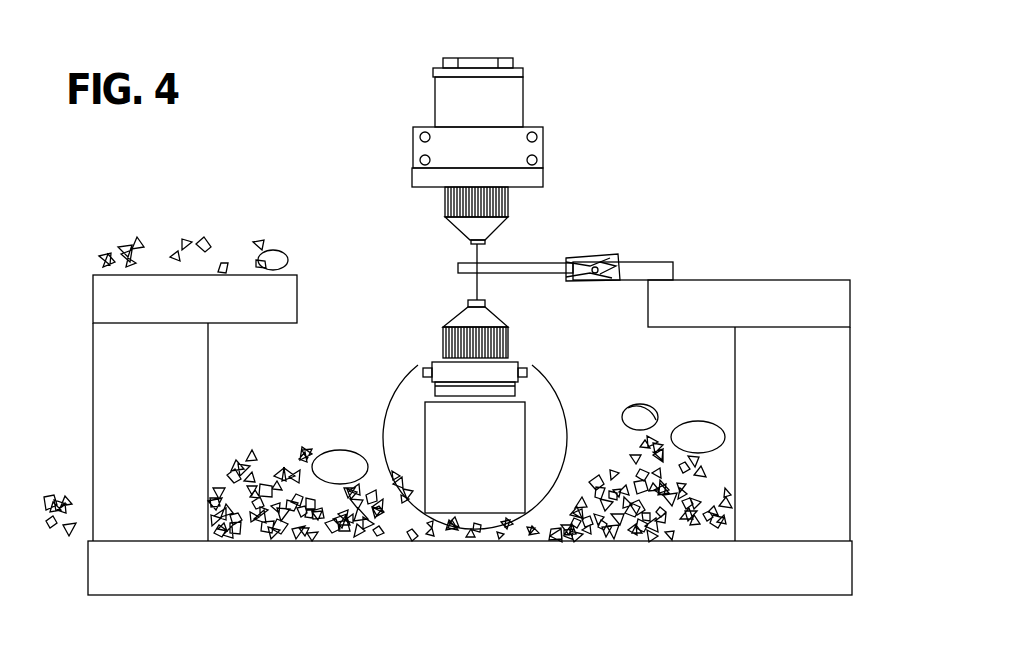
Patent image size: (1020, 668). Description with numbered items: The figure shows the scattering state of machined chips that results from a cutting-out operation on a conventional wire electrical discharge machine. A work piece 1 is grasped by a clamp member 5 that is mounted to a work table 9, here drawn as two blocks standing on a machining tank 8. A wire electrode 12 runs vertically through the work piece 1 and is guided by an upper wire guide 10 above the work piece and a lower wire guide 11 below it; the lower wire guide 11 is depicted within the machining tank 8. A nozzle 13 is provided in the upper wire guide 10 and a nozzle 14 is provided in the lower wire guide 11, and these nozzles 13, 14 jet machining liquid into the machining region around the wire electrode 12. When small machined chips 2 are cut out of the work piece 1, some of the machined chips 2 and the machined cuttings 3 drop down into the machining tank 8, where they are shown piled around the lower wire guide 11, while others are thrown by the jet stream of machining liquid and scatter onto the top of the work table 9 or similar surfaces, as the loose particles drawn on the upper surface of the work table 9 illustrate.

The work piece 1 is at (532, 263).
The machined chips 2 is at (433, 530).
The machined cuttings 3 is at (348, 472).
The clamp 5 is at (660, 263).
The machining tank 8 is at (260, 605).
The work table 9 is at (192, 288).
The upper wire guide 10 is at (523, 93).
The lower wire guide 11 is at (513, 437).
The wire electrode 12 is at (473, 251).
The nozzle 13 is at (457, 222).
The nozzle 14 is at (443, 343).